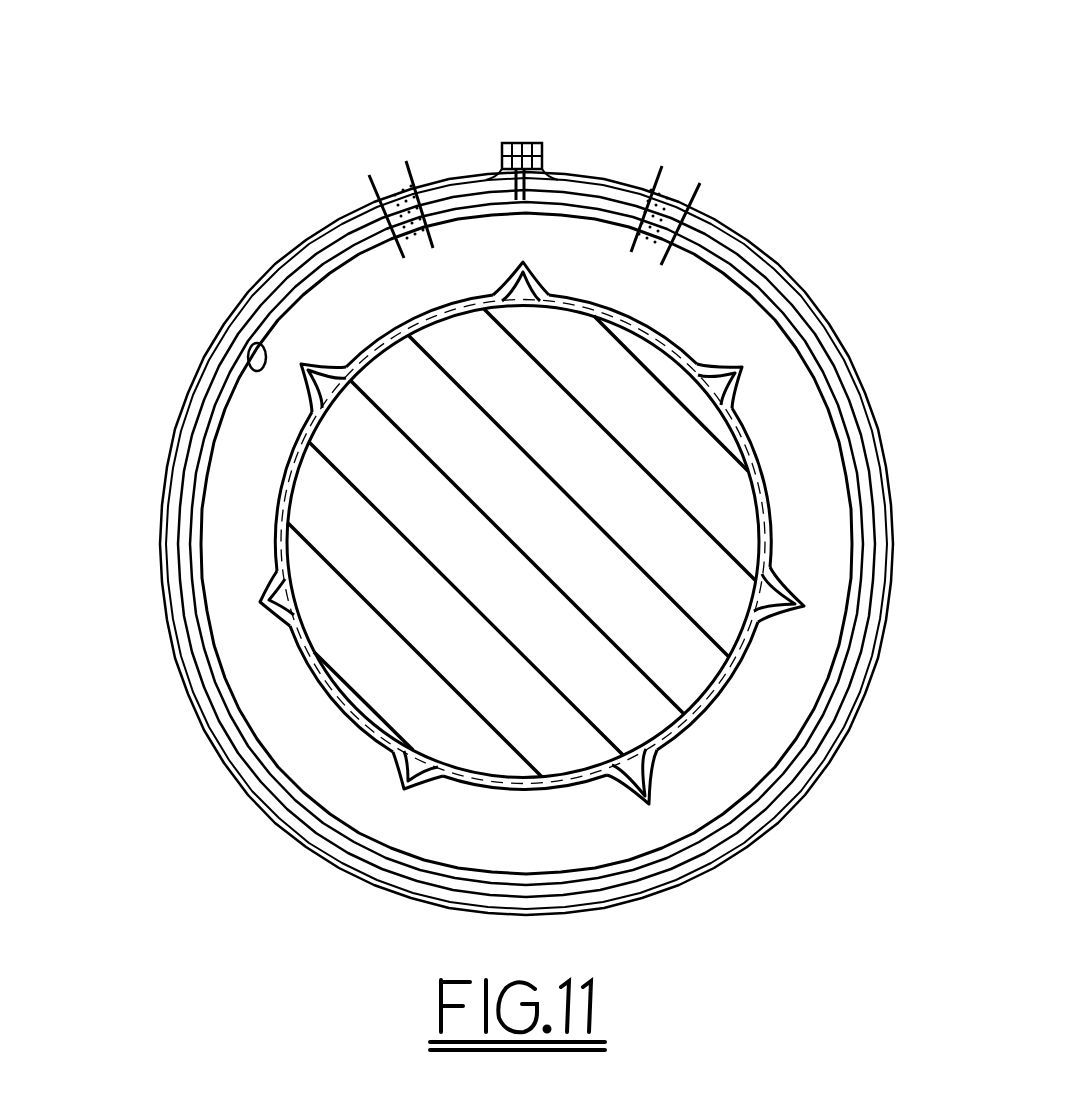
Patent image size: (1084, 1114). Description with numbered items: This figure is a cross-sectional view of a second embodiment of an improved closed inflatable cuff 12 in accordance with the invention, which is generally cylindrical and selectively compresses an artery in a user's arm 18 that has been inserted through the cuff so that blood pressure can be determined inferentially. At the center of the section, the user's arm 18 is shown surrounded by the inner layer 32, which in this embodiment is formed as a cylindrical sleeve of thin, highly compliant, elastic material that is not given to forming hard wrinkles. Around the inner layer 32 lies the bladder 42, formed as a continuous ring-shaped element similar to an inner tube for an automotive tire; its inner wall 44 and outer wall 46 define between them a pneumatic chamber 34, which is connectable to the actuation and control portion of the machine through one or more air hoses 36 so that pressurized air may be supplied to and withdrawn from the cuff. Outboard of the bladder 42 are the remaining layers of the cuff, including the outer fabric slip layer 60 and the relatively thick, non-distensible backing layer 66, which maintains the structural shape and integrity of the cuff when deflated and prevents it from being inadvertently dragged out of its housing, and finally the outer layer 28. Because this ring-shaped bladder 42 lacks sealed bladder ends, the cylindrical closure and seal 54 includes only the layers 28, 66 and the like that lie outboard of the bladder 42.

The closed cuff 12 is at (840, 262).
The user's arm 18 is at (562, 543).
The outer layer 28 is at (159, 573).
The inner layer 32 is at (310, 663).
The pneumatic chamber 34 is at (231, 489).
The air hoses 36 is at (406, 162).
The bladder 42 is at (318, 242).
The inner wall 44 is at (370, 343).
The outer wall 46 is at (236, 348).
The cylindrical closure and seal 54 is at (529, 116).
The outer fabric slip layer 60 is at (241, 740).
The backing layer 66 is at (281, 822).